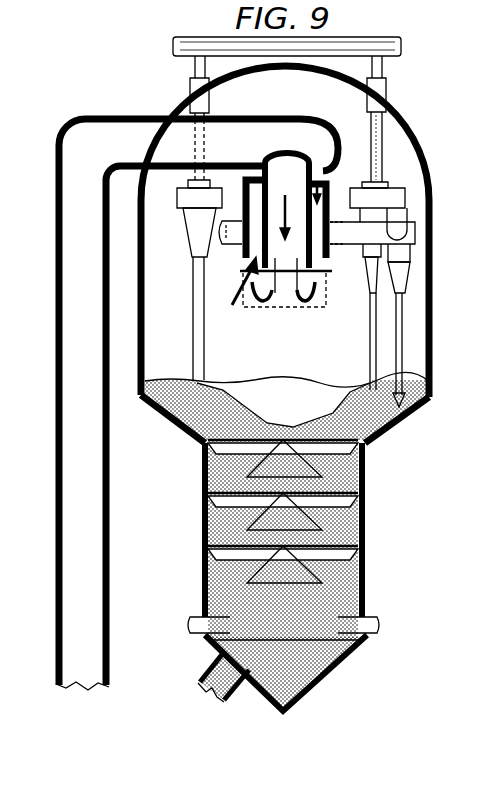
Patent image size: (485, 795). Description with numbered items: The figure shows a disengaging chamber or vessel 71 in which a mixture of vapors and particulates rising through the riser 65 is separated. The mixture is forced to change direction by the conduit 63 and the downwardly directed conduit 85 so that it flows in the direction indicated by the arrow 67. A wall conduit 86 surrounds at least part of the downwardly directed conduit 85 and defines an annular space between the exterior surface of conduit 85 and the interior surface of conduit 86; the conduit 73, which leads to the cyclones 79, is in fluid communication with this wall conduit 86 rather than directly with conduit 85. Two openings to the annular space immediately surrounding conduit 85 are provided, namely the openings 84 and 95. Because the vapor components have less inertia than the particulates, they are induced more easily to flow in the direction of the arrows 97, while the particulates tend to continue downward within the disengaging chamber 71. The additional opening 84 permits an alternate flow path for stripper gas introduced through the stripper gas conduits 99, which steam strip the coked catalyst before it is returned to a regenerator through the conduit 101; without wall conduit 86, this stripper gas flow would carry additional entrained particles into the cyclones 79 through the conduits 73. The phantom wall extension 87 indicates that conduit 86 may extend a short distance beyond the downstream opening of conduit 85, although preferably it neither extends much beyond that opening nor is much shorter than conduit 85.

The conduit 63 is at (268, 116).
The riser 65 is at (108, 432).
The arrow 67 is at (288, 214).
The disengaging chamber 71 is at (410, 130).
The conduit 73 is at (367, 232).
The cyclone 79 is at (398, 258).
The opening 84 is at (321, 176).
The downwardly directed conduit 85 is at (247, 246).
The wall conduit 86 is at (330, 257).
The phantom wall extension 87 is at (330, 300).
The opening 95 is at (233, 289).
The arrows 97 is at (275, 307).
The stripper gas conduit 99 is at (190, 625).
The conduit 101 is at (240, 690).